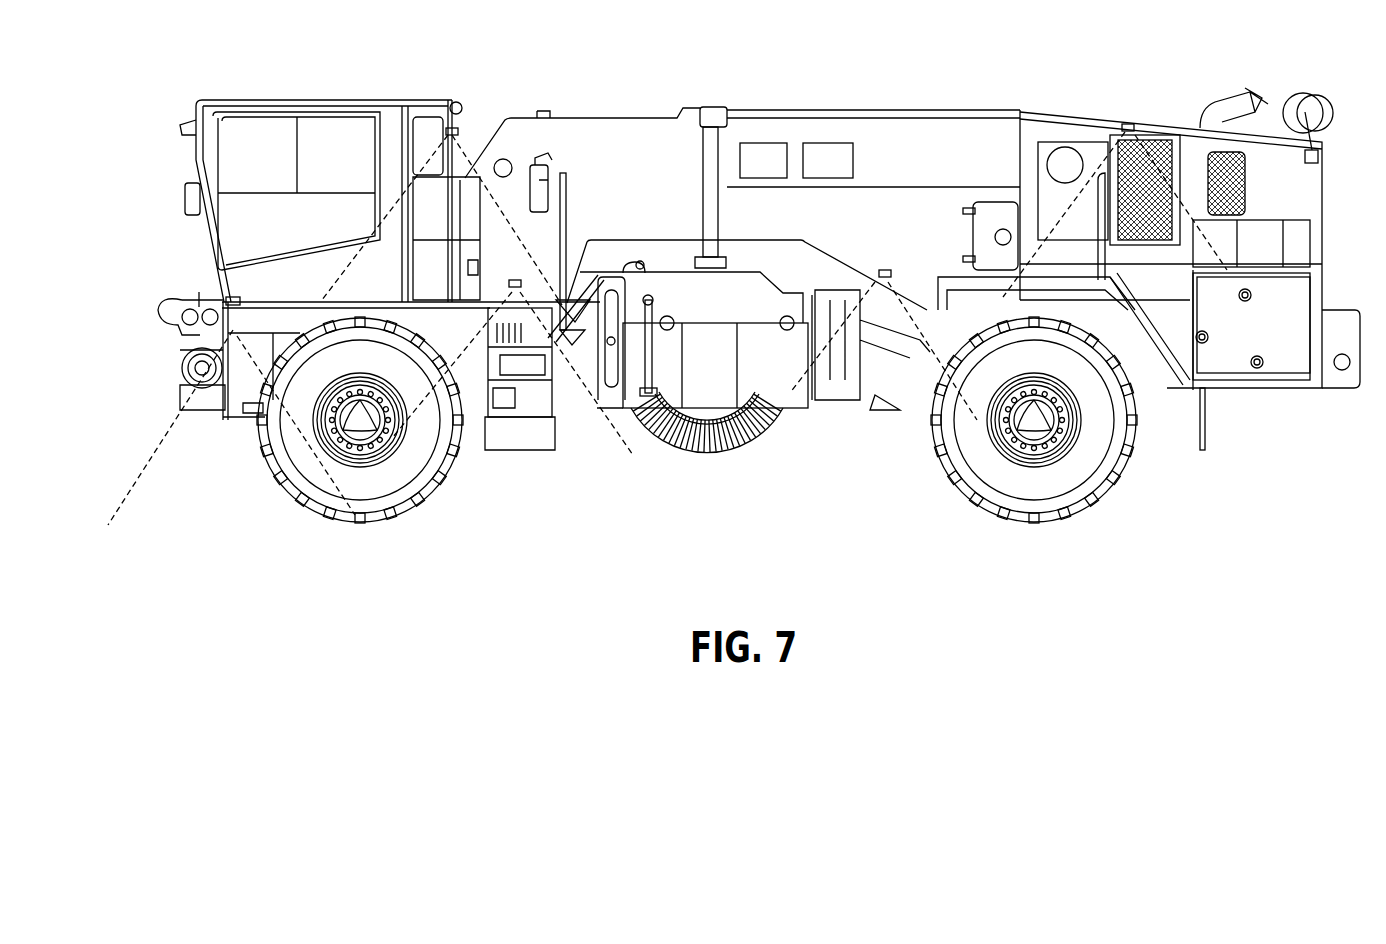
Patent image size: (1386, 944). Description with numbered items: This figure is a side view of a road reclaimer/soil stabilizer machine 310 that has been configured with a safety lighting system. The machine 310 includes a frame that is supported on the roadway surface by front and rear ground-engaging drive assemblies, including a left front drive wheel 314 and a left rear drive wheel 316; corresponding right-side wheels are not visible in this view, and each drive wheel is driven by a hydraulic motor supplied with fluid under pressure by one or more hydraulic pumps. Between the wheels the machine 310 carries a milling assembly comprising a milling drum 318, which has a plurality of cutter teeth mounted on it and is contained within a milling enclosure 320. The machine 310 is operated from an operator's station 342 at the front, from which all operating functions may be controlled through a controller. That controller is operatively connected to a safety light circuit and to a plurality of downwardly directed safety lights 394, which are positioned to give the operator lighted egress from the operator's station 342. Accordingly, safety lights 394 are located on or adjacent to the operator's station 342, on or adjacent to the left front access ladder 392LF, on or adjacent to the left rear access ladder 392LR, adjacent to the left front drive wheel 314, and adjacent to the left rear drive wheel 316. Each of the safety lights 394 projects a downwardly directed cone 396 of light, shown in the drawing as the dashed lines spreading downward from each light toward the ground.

The road reclaimer/soil stabilizer machine 310 is at (878, 82).
The operator's station 342 is at (384, 95).
The safety lights 394 is at (458, 126).
The downwardly directed cone of light 396 is at (1055, 200).
The left front drive wheel 314 is at (435, 487).
The left rear drive wheel 316 is at (1140, 455).
The milling drum 318 is at (715, 457).
The milling enclosure 320 is at (790, 379).
The left front access ladder 392LF is at (522, 452).
The left rear access ladder 392LR is at (1203, 297).